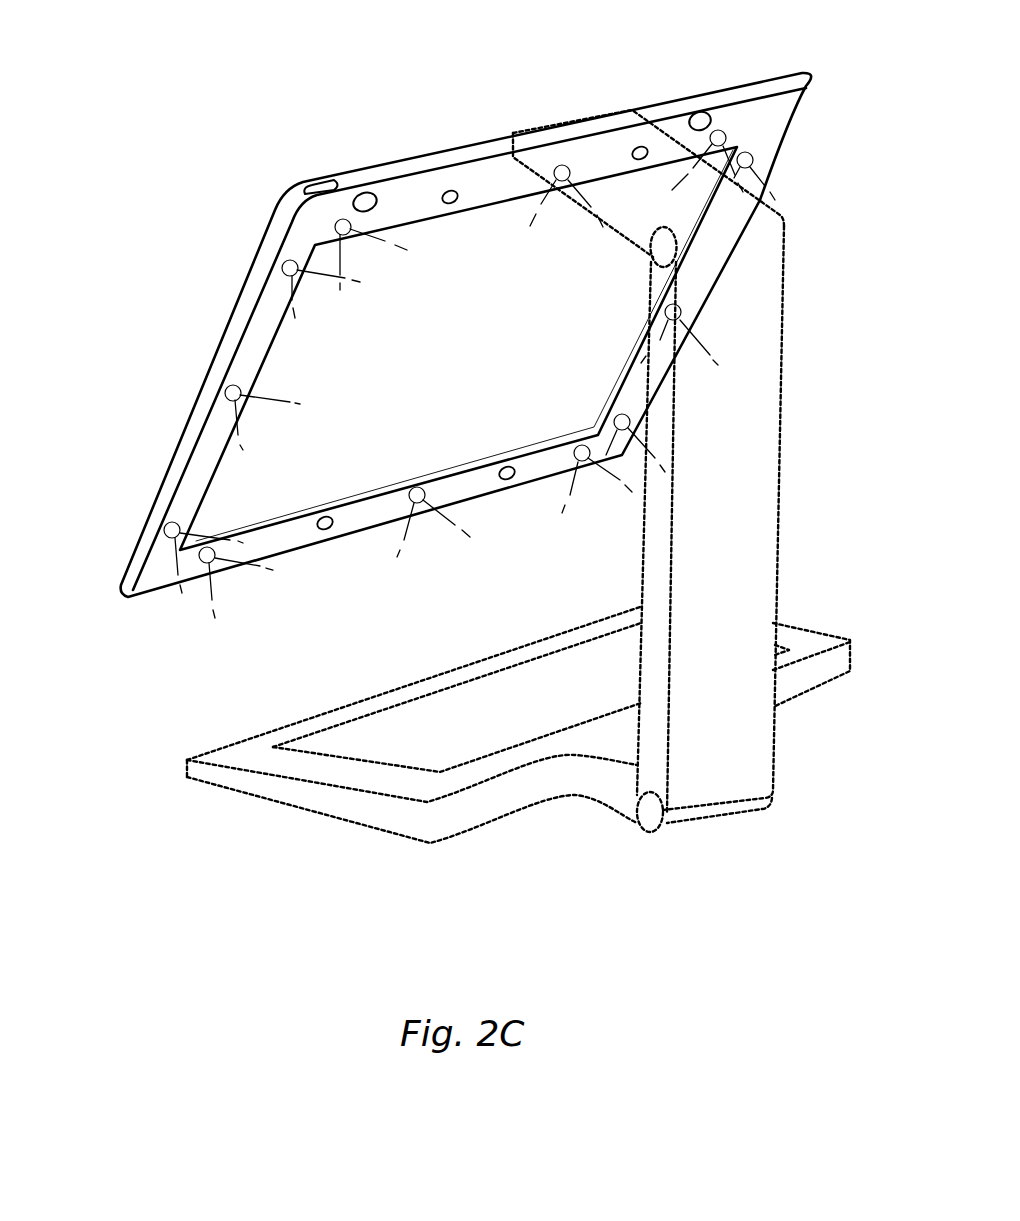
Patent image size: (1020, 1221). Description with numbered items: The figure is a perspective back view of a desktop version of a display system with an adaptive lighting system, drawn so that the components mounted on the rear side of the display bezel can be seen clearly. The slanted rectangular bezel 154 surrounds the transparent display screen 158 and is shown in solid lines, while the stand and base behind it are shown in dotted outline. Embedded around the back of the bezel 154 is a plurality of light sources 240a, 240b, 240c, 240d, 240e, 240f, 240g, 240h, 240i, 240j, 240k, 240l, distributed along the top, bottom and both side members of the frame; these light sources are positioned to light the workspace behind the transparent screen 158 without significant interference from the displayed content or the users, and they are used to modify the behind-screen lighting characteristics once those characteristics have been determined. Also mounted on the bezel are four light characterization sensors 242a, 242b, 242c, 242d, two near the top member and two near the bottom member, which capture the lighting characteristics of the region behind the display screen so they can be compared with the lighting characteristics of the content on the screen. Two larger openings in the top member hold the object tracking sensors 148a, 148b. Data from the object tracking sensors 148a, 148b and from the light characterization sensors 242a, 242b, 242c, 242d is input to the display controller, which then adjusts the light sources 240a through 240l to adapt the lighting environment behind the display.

The bezel frame 154 is at (155, 568).
The display glass 158 is at (307, 487).
The object tracking sensor 148a is at (367, 200).
The object tracking sensor 148b is at (703, 118).
The light characterization sensor 242a is at (640, 150).
The light characterization sensor 242b is at (452, 194).
The light characterization sensor 242c is at (507, 478).
The light characterization sensor 242d is at (322, 532).
The light source 240a is at (726, 137).
The light source 240b is at (563, 168).
The light source 240c is at (337, 226).
The light source 240d is at (283, 268).
The light source 240e is at (226, 391).
The light source 240f is at (165, 531).
The light source 240g is at (205, 564).
The light source 240h is at (416, 491).
The light source 240i is at (578, 450).
The light source 240j is at (618, 419).
The light source 240k is at (666, 306).
The light source 240l is at (753, 160).